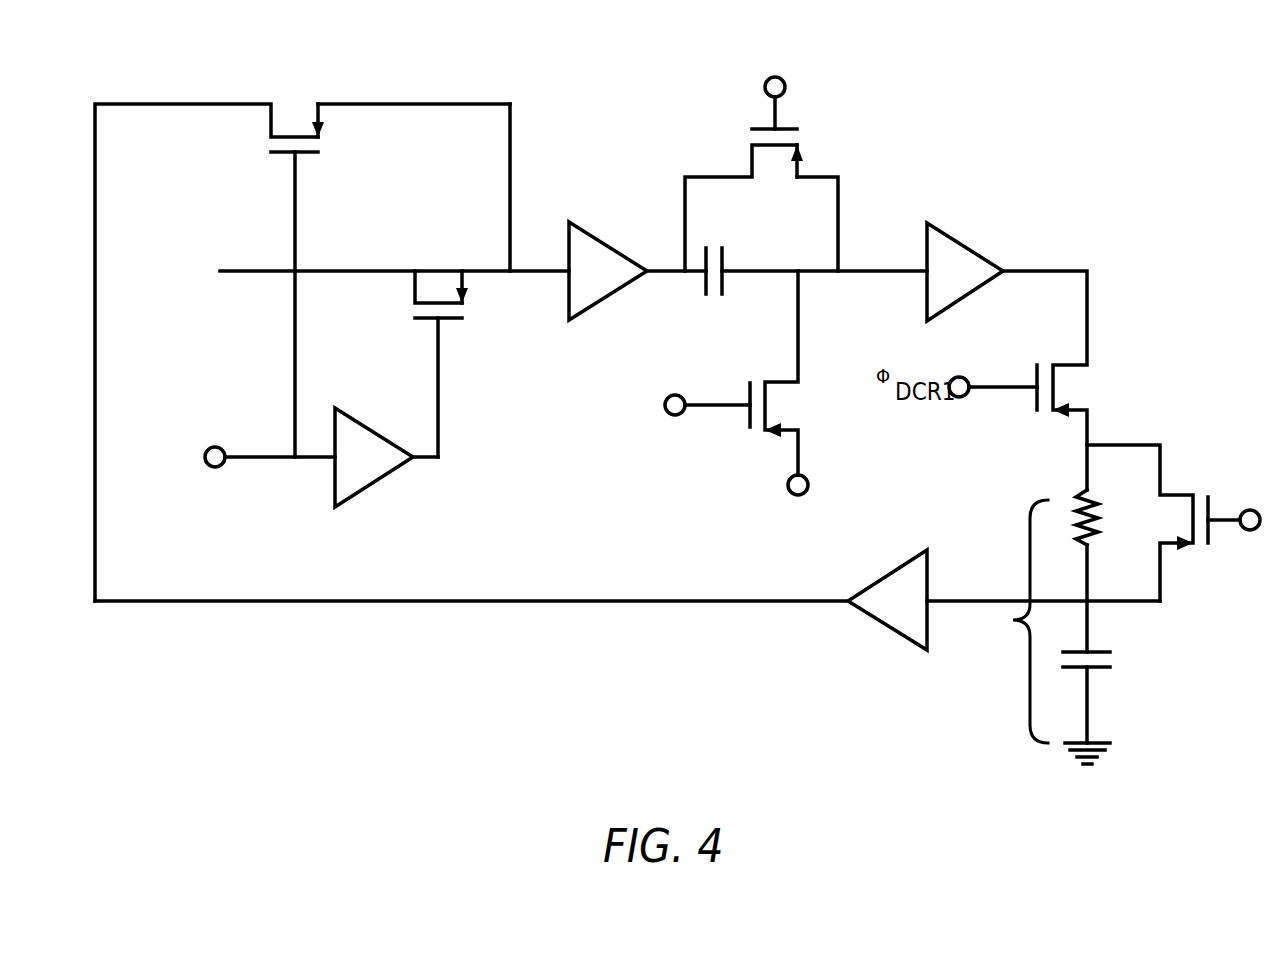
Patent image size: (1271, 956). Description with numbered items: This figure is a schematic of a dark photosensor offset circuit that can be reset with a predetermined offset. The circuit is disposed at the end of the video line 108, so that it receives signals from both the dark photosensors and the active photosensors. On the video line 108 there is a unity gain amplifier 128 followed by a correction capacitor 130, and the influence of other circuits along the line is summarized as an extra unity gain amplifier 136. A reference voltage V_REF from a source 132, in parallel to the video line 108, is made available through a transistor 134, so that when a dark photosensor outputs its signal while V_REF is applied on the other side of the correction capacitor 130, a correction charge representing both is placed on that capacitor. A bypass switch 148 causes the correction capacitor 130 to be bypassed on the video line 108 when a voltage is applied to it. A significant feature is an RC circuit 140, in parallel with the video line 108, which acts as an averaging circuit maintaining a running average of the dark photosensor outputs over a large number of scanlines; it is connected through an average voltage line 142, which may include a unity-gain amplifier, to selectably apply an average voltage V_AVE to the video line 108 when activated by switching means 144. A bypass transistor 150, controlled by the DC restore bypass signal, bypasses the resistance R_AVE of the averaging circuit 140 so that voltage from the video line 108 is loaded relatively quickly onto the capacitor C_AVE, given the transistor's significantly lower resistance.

The video line 108 is at (364, 245).
The unity gain amplifier 128 is at (608, 255).
The correction capacitor 130 is at (737, 290).
The reference voltage source 132 is at (833, 493).
The transistor switch 134 is at (728, 373).
The extra unity gain amplifier 136 is at (973, 256).
The RC circuit 140 is at (1073, 627).
The average voltage line 142 is at (627, 603).
The switching means 144 is at (273, 435).
The bypass switch 148 is at (767, 155).
The bypass transistor 150 is at (1175, 522).